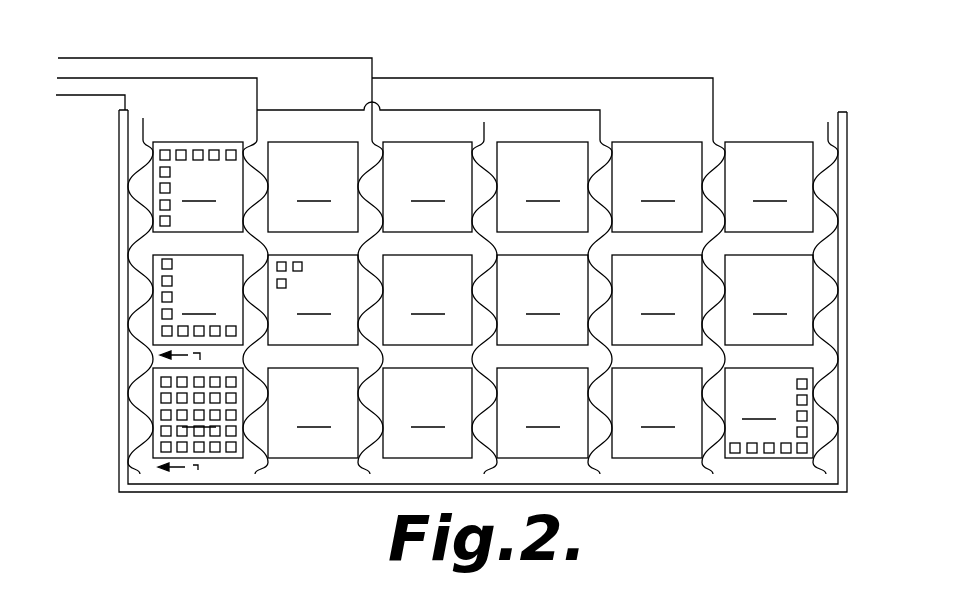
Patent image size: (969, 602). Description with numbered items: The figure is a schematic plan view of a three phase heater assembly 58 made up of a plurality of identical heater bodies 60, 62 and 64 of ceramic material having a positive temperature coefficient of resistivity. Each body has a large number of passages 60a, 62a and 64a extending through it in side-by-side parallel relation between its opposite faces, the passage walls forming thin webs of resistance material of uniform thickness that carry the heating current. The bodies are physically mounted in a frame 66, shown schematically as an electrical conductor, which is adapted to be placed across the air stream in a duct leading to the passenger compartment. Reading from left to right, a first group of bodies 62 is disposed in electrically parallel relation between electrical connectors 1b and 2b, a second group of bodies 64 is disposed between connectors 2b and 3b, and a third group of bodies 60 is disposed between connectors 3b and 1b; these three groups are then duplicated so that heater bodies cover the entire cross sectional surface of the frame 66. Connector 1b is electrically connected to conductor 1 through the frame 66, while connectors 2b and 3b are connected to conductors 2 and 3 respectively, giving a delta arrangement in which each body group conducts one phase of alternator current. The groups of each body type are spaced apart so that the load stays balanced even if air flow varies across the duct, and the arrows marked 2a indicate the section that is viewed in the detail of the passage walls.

The conductor 1 is at (67, 95).
The conductor 2 is at (58, 78).
The conductor 3 is at (57, 59).
The electrical connector 1b is at (150, 237).
The electrical connector 2b is at (255, 474).
The electrical connector 3b is at (380, 478).
The direction arrow 2a is at (179, 416).
The three phase heater assembly 58 is at (167, 498).
The heater section body 60 is at (598, 313).
The passages 60a is at (798, 453).
The heater section body 62 is at (370, 318).
The passages 62a is at (165, 153).
The heater section body 64 is at (485, 300).
The passages 64a is at (297, 262).
The frame 66 is at (123, 322).